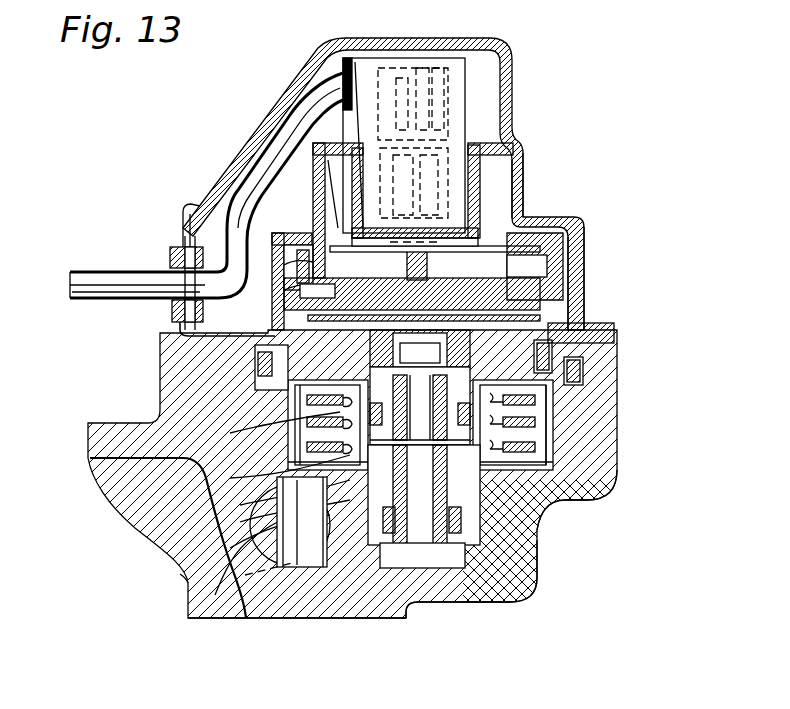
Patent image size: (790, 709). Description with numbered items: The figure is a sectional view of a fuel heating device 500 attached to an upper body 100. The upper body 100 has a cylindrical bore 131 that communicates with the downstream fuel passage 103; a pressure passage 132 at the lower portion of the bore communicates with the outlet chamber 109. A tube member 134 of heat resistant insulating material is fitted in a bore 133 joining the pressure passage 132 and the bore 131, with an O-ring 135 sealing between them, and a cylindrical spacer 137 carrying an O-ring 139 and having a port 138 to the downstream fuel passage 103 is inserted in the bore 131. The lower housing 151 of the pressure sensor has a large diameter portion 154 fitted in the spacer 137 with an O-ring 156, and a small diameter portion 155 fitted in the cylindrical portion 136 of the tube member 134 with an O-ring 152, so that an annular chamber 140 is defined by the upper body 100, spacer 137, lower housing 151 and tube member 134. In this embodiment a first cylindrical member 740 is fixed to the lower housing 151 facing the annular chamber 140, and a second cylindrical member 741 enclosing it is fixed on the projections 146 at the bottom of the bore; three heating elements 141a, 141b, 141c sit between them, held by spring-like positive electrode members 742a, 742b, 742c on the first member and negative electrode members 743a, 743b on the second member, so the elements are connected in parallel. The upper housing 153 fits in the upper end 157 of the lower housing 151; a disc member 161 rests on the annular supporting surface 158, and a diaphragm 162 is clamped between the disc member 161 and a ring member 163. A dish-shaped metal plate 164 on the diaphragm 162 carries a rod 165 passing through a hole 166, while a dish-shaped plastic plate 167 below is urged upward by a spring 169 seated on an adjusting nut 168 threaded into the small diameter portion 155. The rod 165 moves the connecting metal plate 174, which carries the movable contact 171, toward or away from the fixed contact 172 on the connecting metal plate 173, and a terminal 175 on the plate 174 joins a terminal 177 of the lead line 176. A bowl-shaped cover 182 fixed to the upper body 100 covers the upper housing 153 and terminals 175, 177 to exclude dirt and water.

The upper body 100 is at (510, 608).
The downstream fuel passage 103 is at (290, 545).
The outlet chamber 109 is at (182, 574).
The cylindrical bore 131 is at (588, 484).
The pressure passage 132 is at (465, 548).
The bore 133 is at (452, 562).
The tube member 134 is at (462, 512).
The O-ring 135 is at (442, 560).
The cylindrical portion 136 is at (506, 490).
The cylindrical spacer 137 is at (580, 460).
The port 138 is at (240, 505).
The O-ring 139 is at (546, 356).
The annular chamber 140 is at (578, 373).
The heating element 141a is at (532, 388).
The heating element 141b is at (522, 420).
The heating element 141c is at (520, 447).
The projections 146 is at (496, 490).
The lower housing 151 is at (262, 362).
The O-ring 152 is at (318, 560).
The upper housing 153 is at (510, 160).
The large diameter portion 154 is at (540, 300).
The small diameter portion 155 is at (384, 545).
The O-ring 156 is at (552, 340).
The upper end 157 is at (572, 226).
The annular supporting surface 158 is at (530, 328).
The disc member 161 is at (535, 264).
The diaphragm 162 is at (215, 281).
The ring member 163 is at (172, 315).
The dish-shaped metal plate 164 is at (178, 254).
The rod 165 is at (490, 243).
The hole 166 is at (186, 232).
The dish-shaped plastic plate 167 is at (220, 348).
The adjusting nut 168 is at (445, 575).
The spring 169 is at (440, 556).
The movable contact 171 is at (275, 152).
The fixed contact 172 is at (290, 262).
The connecting metal plate 173 is at (300, 285).
The connecting metal plate 174 is at (518, 190).
The terminal 175 is at (470, 126).
The lead line 176 is at (293, 125).
The terminal 177 is at (390, 64).
The bowl-shaped cover 182 is at (440, 40).
The fuel heating device 500 is at (215, 150).
The first cylindrical member 740 is at (215, 595).
The second cylindrical member 741 is at (340, 425).
The positive electrode member 742a is at (348, 400).
The positive electrode member 742b is at (230, 478).
The positive electrode member 742c is at (230, 548).
The negative electrode member 743a is at (230, 433).
The negative electrode member 743b is at (240, 522).